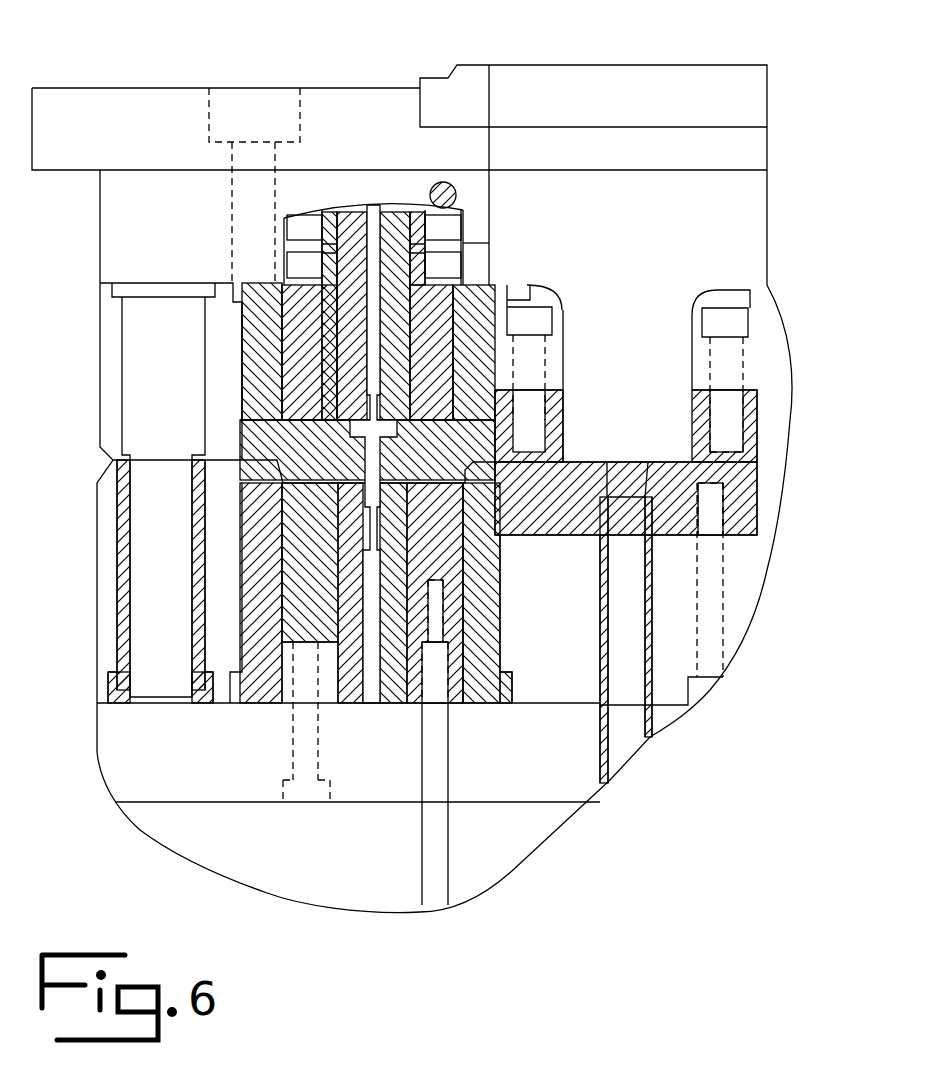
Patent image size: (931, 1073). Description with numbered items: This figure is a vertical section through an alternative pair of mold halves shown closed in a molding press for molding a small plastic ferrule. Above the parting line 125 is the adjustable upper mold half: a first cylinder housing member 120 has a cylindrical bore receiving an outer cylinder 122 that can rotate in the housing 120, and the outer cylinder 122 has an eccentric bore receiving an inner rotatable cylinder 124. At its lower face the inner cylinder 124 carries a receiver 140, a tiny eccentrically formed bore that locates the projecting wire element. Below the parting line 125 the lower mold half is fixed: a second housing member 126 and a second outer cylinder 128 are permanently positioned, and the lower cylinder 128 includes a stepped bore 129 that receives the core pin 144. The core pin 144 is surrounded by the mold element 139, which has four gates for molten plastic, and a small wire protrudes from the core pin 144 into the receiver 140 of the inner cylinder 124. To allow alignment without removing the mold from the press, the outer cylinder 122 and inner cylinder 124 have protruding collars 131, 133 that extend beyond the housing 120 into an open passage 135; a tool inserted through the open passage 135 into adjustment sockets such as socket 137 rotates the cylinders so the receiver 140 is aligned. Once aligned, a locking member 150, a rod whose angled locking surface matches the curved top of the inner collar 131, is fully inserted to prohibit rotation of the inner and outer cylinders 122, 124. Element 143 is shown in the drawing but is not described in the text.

The first cylinder housing member 120 is at (318, 287).
The outer cylinder 122 is at (455, 285).
The inner rotatable cylinder 124 is at (355, 213).
The parting line 125 is at (455, 485).
The second housing member 126 is at (290, 660).
The second outer cylinder 128 is at (350, 703).
The stepped bore 129 is at (345, 523).
The inner collar 131 is at (463, 210).
The outer collar 133 is at (488, 243).
The open passage 135 is at (733, 203).
The adjustment socket 137 is at (297, 265).
The mold element 139 is at (285, 283).
The receiver 140 is at (380, 403).
The sleeve 143 is at (250, 628).
The core pin 144 is at (350, 523).
The locking member 150 is at (440, 193).